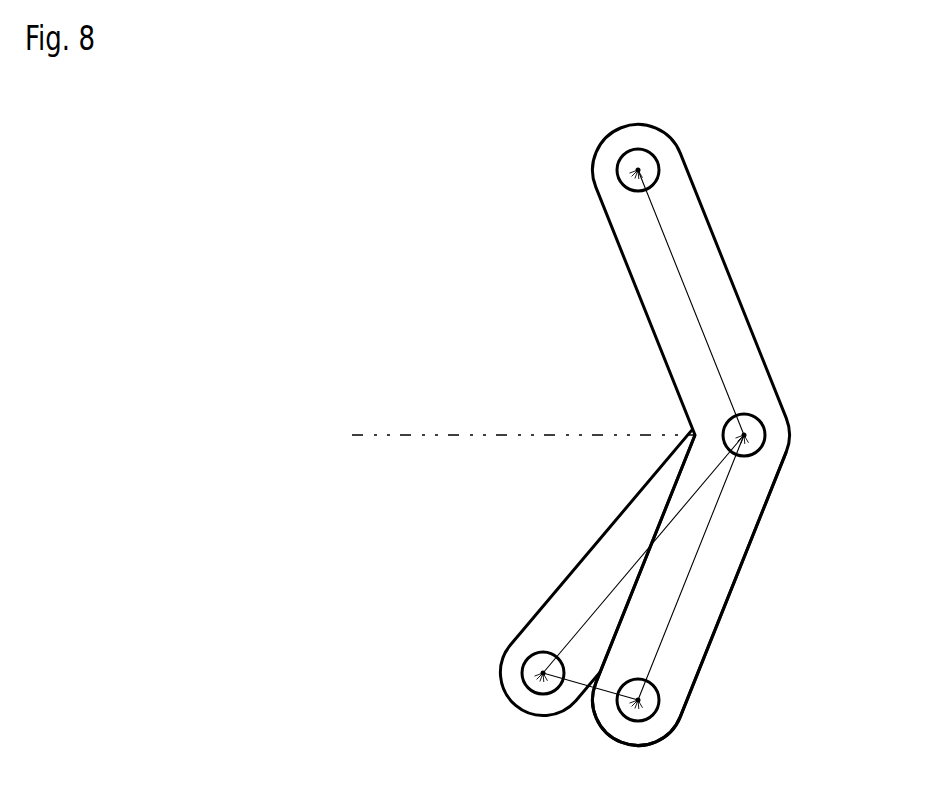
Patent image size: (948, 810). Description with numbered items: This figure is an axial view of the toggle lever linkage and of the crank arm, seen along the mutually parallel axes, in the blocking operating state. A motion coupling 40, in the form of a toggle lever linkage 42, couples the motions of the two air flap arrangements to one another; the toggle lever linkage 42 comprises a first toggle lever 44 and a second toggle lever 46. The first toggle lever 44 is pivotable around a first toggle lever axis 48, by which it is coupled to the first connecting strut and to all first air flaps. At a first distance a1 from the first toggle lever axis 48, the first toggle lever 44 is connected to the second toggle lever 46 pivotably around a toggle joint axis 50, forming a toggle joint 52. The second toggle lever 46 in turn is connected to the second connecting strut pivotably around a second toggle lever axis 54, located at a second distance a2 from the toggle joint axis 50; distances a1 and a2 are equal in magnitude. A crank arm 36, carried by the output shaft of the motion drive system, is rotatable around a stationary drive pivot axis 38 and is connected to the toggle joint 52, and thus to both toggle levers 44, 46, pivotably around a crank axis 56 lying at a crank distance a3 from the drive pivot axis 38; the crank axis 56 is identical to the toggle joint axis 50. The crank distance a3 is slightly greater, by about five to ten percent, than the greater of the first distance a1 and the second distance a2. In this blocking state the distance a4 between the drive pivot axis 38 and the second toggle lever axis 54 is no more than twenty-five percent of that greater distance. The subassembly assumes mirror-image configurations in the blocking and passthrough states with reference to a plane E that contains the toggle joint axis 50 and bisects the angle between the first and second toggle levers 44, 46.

The crank arm 36 is at (609, 551).
The drive pivot axis 38 is at (543, 673).
The motion coupling 40 is at (464, 389).
The toggle lever linkage 42 is at (524, 395).
The first toggle lever 44 is at (653, 283).
The second toggle lever 46 is at (720, 568).
The first toggle lever axis 48 is at (638, 170).
The toggle joint axis 50 is at (805, 419).
The toggle joint 52 is at (820, 440).
The second toggle lever axis 54 is at (638, 700).
The crank axis 56 is at (744, 435).
The first distance a1 is at (686, 284).
The second distance a2 is at (712, 522).
The crank distance a3 is at (595, 610).
The distance between drive pivot axis and second toggle lever axis a4 is at (592, 688).
The plane E is at (437, 437).